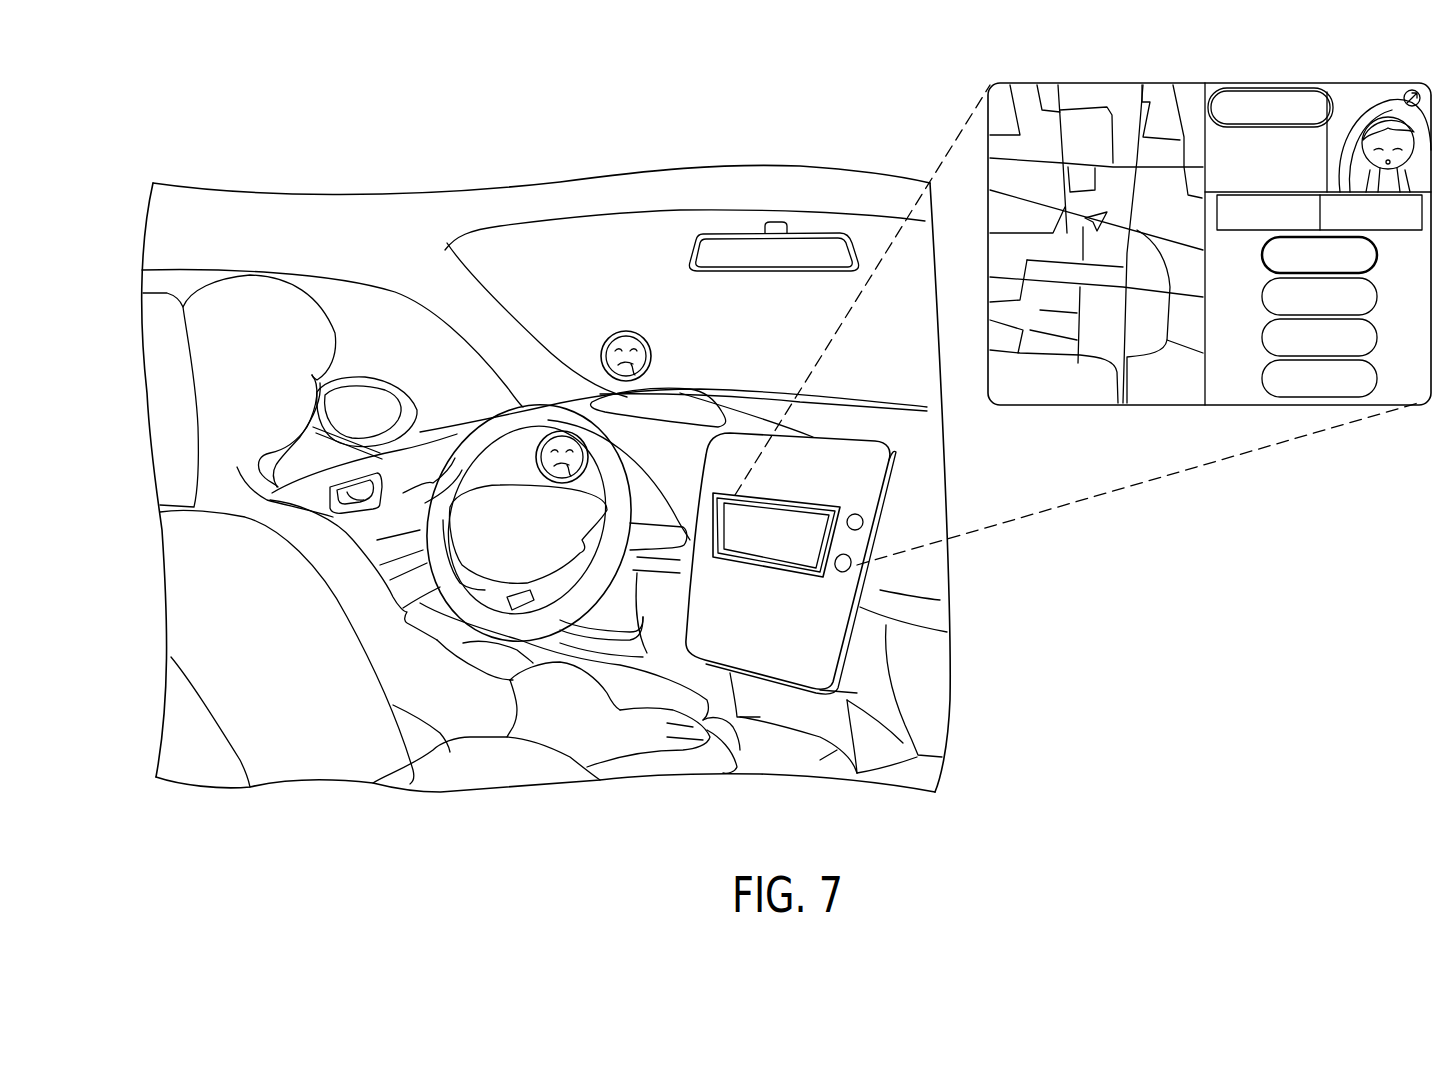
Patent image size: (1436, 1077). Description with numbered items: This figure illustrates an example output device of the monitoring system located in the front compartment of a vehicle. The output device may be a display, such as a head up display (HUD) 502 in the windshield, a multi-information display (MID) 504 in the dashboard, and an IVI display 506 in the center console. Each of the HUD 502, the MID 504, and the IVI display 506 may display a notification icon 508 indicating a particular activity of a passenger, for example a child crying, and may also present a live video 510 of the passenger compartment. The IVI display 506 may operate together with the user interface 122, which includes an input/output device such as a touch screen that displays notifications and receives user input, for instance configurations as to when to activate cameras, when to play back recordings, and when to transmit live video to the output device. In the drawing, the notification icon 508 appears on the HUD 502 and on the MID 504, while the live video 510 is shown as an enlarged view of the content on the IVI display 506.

The user interface 122 is at (791, 563).
The head up display (HUD) 502 is at (638, 330).
The multi-information display (MID) 504 is at (520, 440).
The IVI display 506 is at (758, 547).
The notification icon 508 is at (613, 330).
The live video 510 is at (1343, 93).